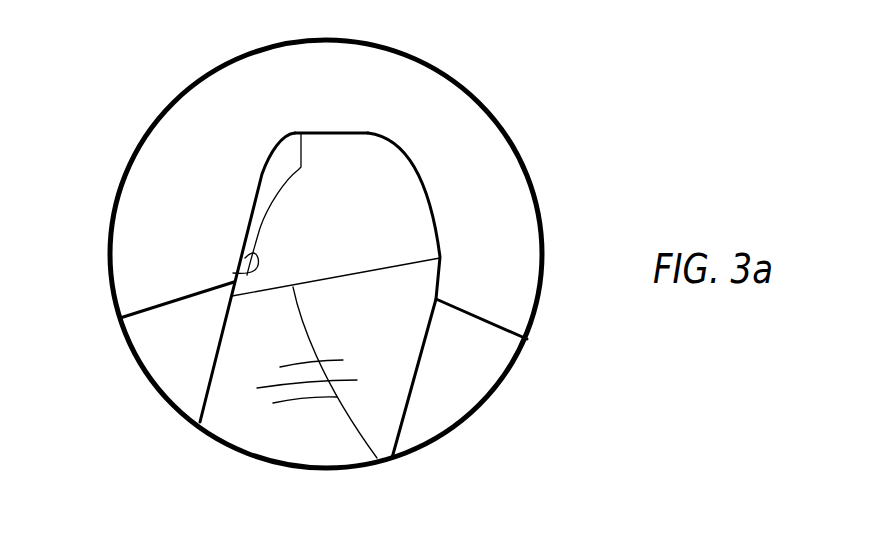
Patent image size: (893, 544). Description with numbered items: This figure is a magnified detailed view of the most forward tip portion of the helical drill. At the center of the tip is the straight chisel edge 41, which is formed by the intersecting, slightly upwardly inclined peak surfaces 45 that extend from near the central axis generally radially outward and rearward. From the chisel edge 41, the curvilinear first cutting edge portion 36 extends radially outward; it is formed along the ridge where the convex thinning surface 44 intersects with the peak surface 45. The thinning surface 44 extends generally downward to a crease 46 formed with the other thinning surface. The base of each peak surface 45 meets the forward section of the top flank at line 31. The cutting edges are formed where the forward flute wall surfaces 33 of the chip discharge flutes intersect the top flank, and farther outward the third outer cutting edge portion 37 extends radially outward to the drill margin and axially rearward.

The line 31 is at (377, 460).
The forward flute wall surface 33 is at (413, 387).
The first cutting edge portion 36 is at (408, 157).
The third outer cutting edge portion 37 is at (262, 367).
The chisel edge 41 is at (337, 130).
The thinning surface 44 is at (272, 186).
The peak surface 45 is at (373, 245).
The crease 46 is at (233, 273).